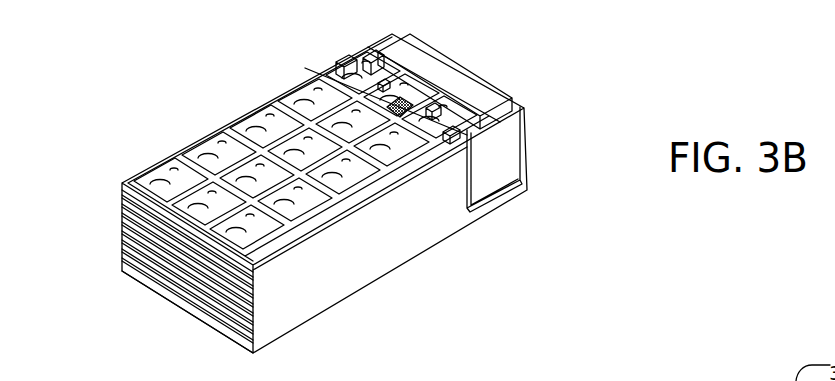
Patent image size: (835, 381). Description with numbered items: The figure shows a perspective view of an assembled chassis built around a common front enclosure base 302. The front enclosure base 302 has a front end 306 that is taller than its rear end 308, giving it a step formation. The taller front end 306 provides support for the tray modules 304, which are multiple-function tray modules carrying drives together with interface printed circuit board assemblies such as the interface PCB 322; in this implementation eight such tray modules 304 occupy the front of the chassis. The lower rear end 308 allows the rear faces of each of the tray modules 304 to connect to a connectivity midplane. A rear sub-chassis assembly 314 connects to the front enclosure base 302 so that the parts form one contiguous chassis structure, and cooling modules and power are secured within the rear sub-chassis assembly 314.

The front enclosure base 302 is at (358, 291).
The tray module 304 is at (122, 203).
The front end 306 is at (160, 331).
The rear end 308 is at (552, 166).
The rear sub-chassis assembly 314 is at (433, 63).
The interface PCB 322 is at (335, 75).